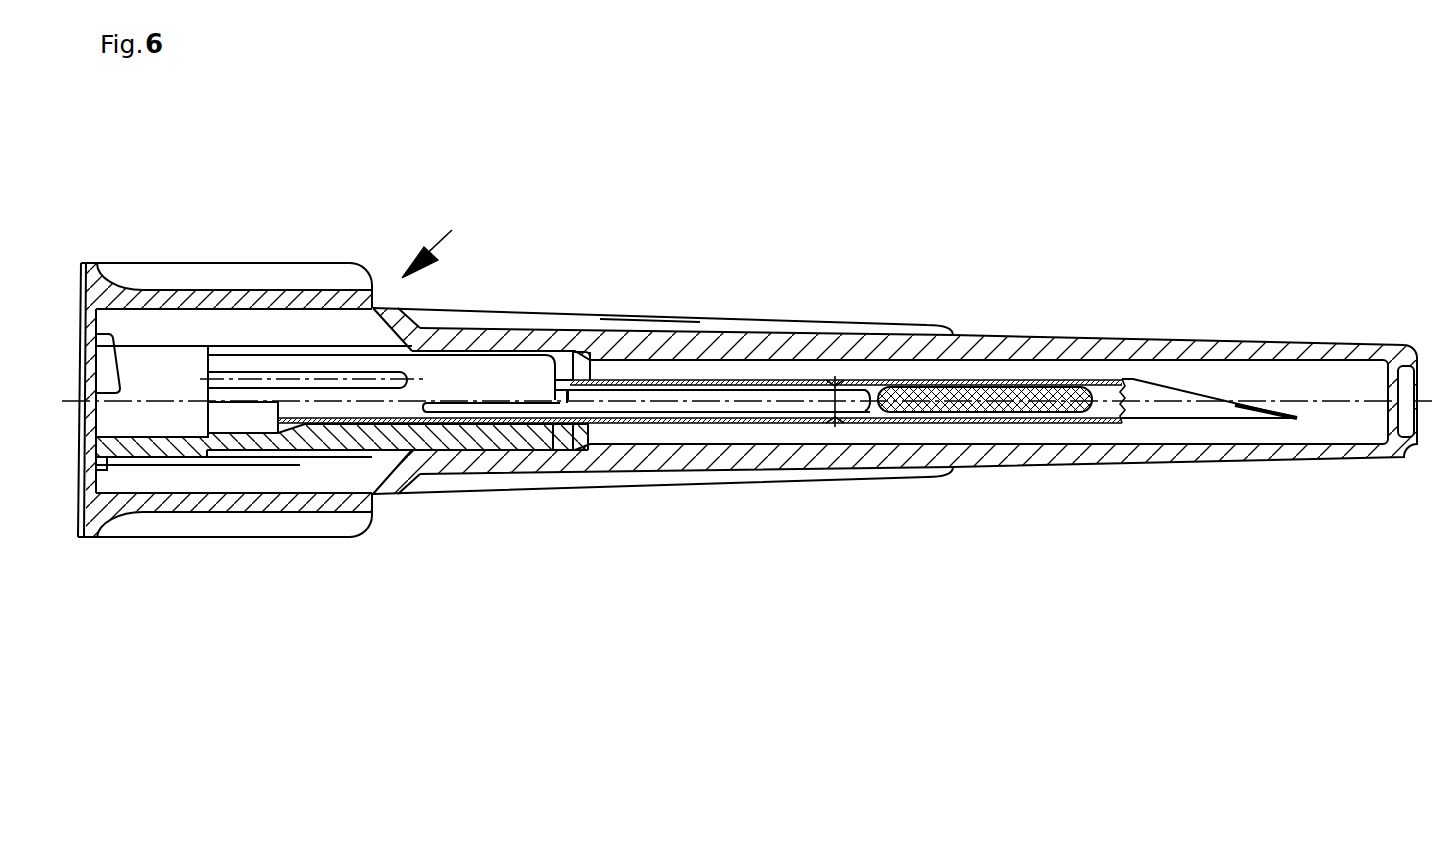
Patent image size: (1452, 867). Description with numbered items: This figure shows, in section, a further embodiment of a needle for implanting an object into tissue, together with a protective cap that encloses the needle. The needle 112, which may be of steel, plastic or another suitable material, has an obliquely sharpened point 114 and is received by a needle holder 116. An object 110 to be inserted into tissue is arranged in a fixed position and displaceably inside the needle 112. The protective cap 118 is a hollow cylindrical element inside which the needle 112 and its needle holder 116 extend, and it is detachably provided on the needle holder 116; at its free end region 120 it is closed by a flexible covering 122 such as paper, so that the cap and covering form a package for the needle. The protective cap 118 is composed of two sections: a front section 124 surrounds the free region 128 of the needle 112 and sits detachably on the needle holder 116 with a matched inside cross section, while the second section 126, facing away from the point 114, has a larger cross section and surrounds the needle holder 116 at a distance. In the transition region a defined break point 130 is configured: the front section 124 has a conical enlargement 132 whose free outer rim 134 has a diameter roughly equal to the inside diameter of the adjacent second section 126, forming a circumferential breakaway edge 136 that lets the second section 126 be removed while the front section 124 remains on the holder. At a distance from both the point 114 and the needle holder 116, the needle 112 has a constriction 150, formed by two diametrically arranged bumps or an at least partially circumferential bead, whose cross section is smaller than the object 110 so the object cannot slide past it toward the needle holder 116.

The object 110 is at (1034, 392).
The needle 112 is at (776, 424).
The point 114 is at (1194, 378).
The needle holder 116 is at (551, 378).
The protective cap 118 is at (760, 342).
The free end region 120 is at (100, 262).
The covering 122 is at (78, 538).
The front section 124 is at (636, 342).
The second section 126 is at (232, 300).
The free region 128 is at (641, 424).
The defined break point 130 is at (433, 208).
The conical enlargement 132 is at (415, 322).
The free outer rim 134 is at (373, 497).
The circumferential breakaway edge 136 is at (380, 295).
The constriction 150 is at (836, 378).